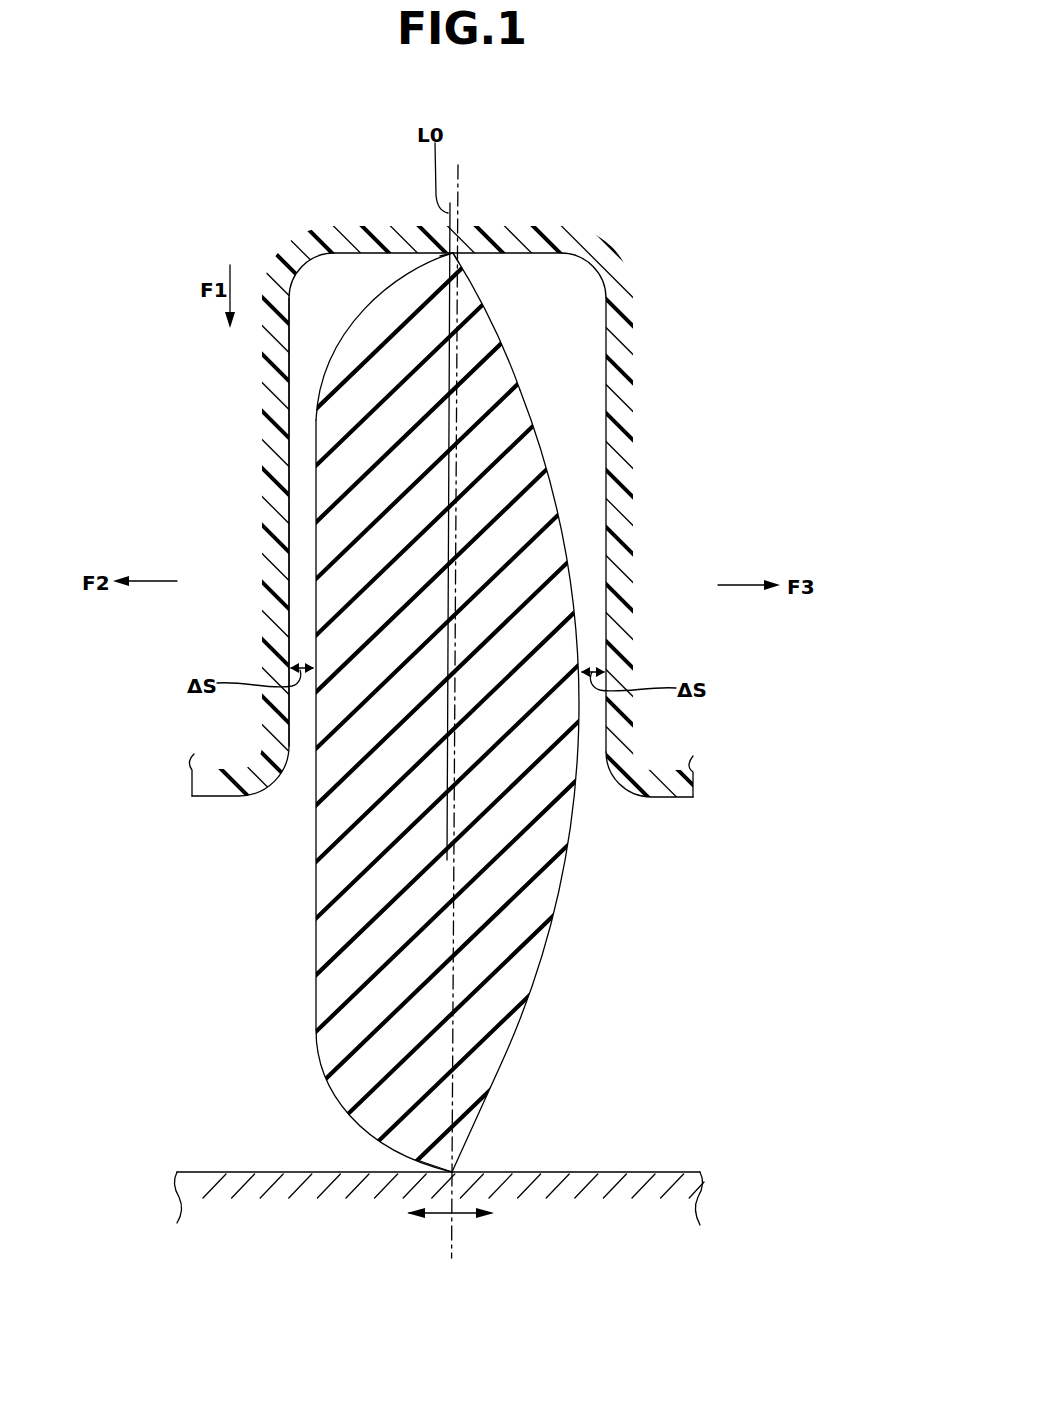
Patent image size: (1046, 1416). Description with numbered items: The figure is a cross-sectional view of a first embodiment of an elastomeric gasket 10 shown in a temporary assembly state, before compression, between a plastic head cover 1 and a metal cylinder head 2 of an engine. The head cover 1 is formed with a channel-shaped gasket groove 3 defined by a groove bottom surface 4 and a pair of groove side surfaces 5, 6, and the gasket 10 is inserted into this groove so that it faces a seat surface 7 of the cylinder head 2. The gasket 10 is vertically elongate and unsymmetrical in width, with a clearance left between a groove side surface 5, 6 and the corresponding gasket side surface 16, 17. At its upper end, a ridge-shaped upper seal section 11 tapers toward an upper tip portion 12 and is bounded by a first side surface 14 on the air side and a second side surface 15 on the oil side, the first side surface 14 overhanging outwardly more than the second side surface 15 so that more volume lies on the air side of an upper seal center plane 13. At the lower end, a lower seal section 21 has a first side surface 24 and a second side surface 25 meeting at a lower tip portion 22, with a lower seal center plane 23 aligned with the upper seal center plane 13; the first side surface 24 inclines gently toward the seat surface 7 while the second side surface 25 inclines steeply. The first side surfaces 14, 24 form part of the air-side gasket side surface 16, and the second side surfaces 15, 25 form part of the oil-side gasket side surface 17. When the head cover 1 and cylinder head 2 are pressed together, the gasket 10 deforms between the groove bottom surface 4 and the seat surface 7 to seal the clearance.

The head cover 1 is at (523, 467).
The cylinder head 2 is at (439, 1147).
The gasket groove 3 is at (575, 358).
The groove bottom surface 4 is at (523, 253).
The groove side surface 5 is at (296, 490).
The groove side surface 6 is at (596, 492).
The seat surface 7 is at (485, 1172).
The gasket 10 is at (523, 708).
The upper seal section 11 is at (419, 262).
The upper tip portion 12 is at (453, 253).
The upper seal center plane 13 is at (462, 178).
The first side surface 14 is at (360, 312).
The second side surface 15 is at (495, 318).
The gasket side surface 16 is at (315, 622).
The gasket side surface 17 is at (578, 628).
The lower seal section 21 is at (405, 1132).
The lower tip portion 22 is at (453, 1175).
The lower seal center plane 23 is at (448, 1230).
The first side surface 24 is at (362, 1118).
The second side surface 25 is at (505, 1063).